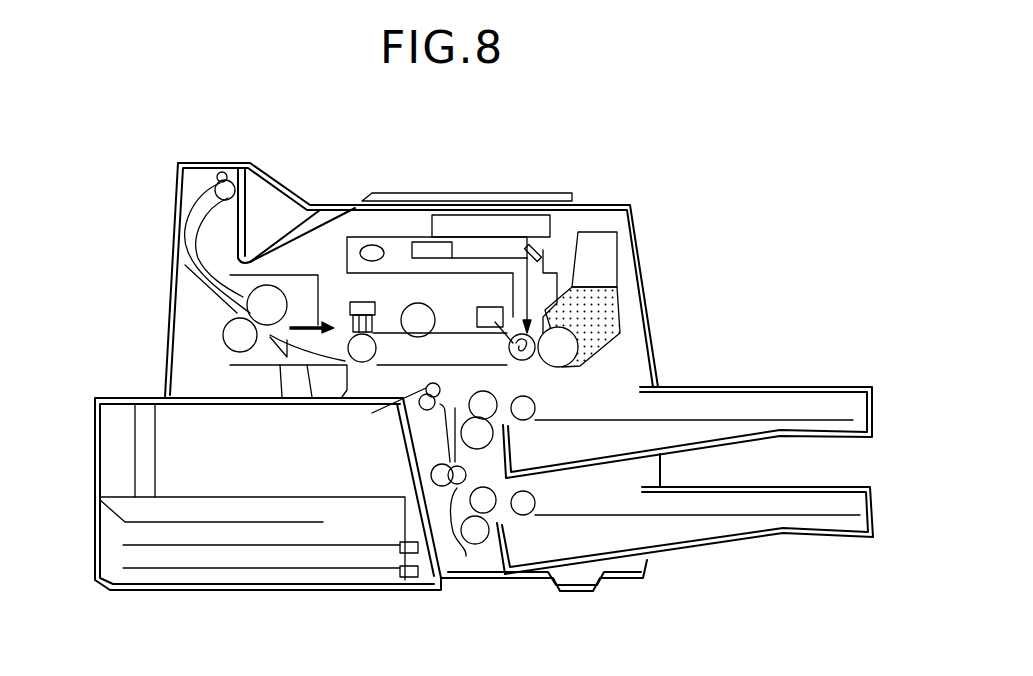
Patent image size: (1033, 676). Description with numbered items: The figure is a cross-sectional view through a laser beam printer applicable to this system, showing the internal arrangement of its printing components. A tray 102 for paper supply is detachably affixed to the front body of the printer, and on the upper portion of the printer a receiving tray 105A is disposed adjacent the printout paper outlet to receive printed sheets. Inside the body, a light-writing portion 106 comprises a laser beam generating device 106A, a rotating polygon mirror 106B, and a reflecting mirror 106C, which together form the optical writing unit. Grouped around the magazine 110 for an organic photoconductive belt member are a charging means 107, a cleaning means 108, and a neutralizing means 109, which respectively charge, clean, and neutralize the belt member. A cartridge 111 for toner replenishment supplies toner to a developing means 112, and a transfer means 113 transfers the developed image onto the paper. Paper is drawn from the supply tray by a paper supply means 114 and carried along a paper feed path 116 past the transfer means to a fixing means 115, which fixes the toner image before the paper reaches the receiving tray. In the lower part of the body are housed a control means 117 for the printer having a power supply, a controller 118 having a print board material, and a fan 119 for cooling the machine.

The tray 102 is at (783, 397).
The receiving tray 105A is at (537, 196).
The light-writing portion 106 is at (478, 243).
The laser beam generating device 106A is at (368, 245).
The rotating polygon mirror 106B is at (423, 243).
The reflecting mirror 106C is at (590, 217).
The charging means 107 is at (526, 360).
The cleaning means 108 is at (447, 303).
The neutralizing means 109 is at (353, 303).
The magazine 110 is at (428, 352).
The cartridge 111 is at (607, 248).
The developing means 112 is at (607, 304).
The transfer means 113 is at (357, 381).
The paper supply means 114 is at (471, 555).
The fixing means 115 is at (230, 322).
The paper feed path 116 is at (190, 217).
The control means 117 is at (170, 410).
The controller 118 is at (228, 523).
The fan 119 is at (113, 450).